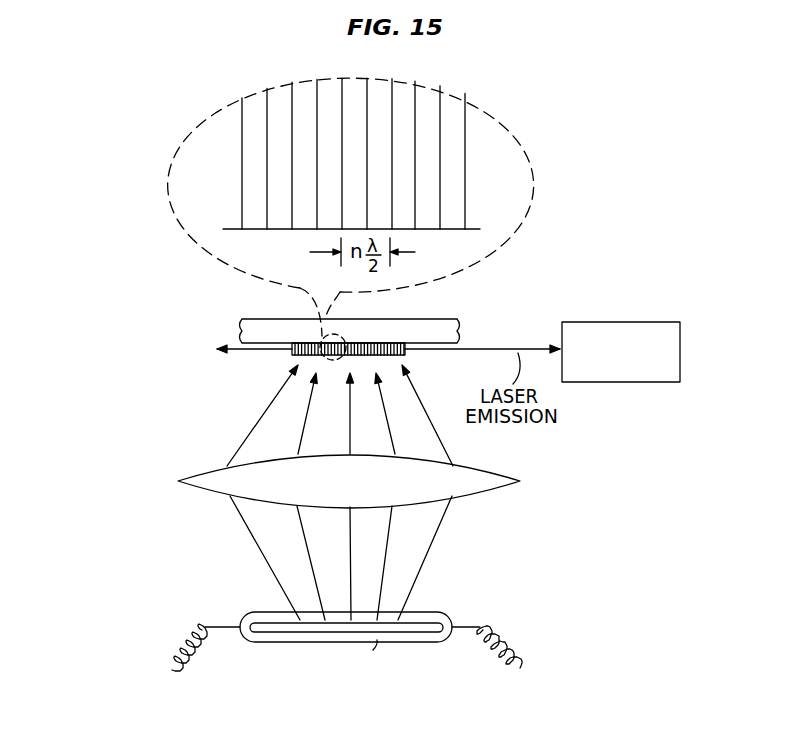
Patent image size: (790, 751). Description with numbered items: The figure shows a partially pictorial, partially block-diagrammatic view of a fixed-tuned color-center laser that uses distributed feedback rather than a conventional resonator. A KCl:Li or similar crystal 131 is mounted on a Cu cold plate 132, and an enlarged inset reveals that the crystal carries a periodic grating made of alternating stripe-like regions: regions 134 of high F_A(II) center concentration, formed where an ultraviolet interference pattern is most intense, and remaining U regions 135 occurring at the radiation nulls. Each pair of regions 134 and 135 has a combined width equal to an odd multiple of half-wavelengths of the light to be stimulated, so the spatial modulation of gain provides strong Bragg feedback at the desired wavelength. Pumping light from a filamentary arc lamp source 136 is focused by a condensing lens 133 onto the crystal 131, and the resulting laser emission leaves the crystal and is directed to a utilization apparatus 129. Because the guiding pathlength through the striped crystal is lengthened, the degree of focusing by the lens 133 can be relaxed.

The utilization apparatus 129 is at (646, 382).
The crystal 131 is at (296, 355).
The Cu cold plate 132 is at (242, 323).
The lens 133 is at (178, 498).
The regions of F_A(II) centers 134 is at (448, 102).
The U regions 135 is at (423, 93).
The source 136 is at (252, 640).